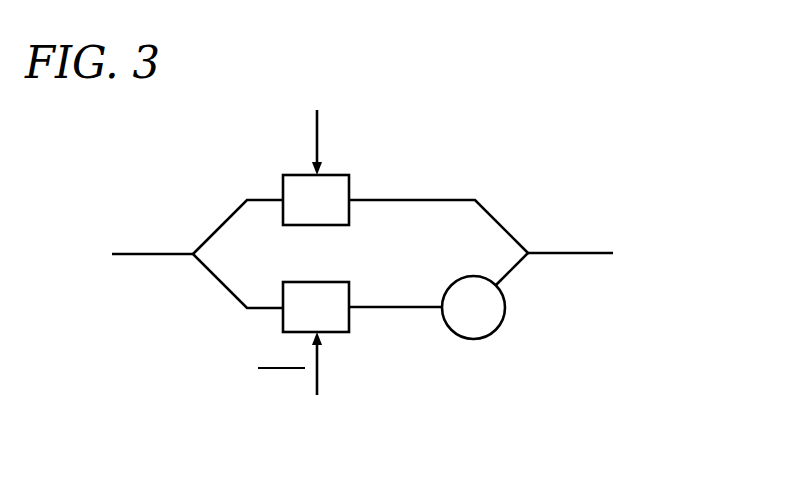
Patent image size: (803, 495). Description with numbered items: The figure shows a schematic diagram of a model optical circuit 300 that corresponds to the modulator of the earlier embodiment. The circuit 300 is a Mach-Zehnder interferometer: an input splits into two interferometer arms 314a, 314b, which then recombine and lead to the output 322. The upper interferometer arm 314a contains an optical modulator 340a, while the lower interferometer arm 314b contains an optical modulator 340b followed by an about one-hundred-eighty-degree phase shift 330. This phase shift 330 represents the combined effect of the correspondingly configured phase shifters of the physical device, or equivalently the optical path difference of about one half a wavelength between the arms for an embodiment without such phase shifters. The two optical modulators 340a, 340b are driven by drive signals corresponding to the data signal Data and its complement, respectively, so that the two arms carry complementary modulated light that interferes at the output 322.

The model optical circuit 300 is at (105, 112).
The interferometer arm 314a is at (203, 208).
The interferometer arm 314b is at (205, 297).
The optical modulator 340a is at (350, 185).
The optical modulator 340b is at (350, 292).
The output 322 is at (570, 251).
The phase shift 330 is at (505, 322).